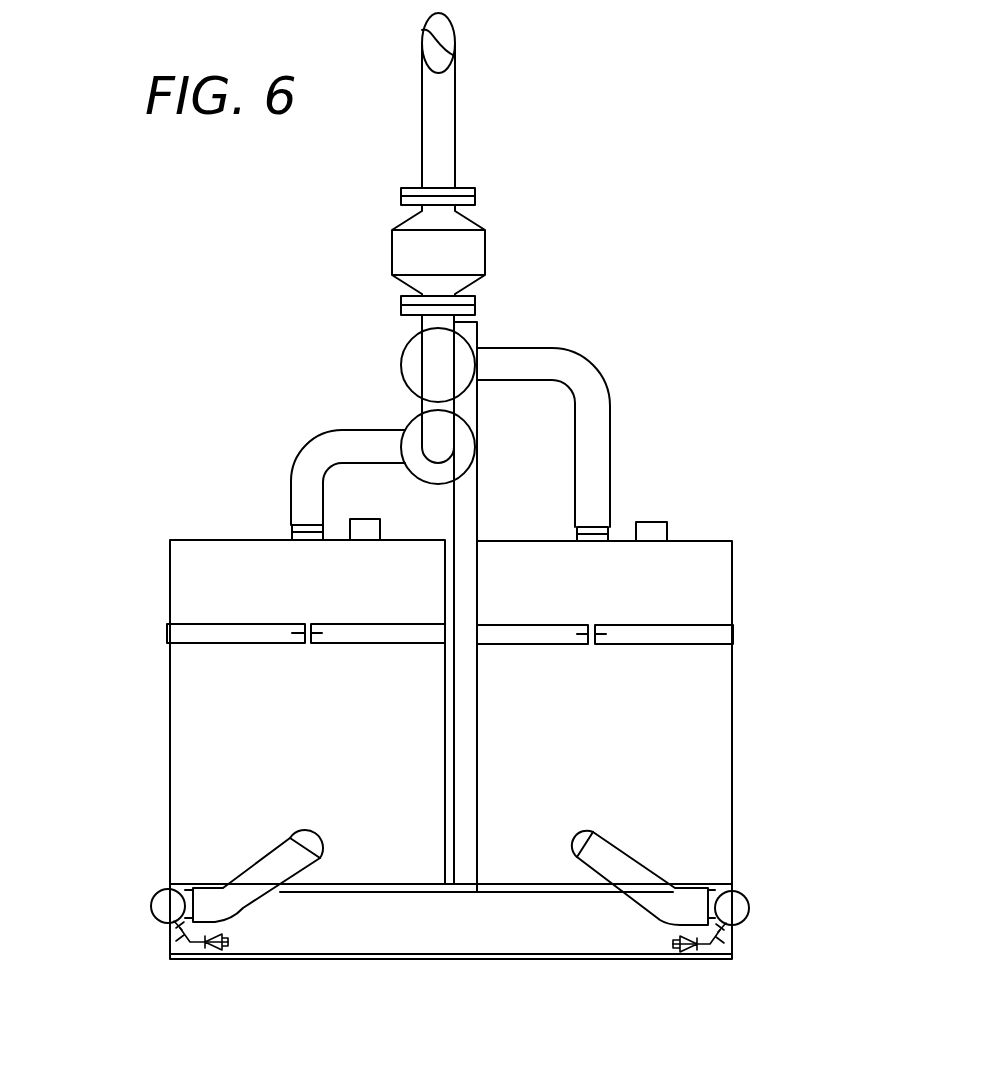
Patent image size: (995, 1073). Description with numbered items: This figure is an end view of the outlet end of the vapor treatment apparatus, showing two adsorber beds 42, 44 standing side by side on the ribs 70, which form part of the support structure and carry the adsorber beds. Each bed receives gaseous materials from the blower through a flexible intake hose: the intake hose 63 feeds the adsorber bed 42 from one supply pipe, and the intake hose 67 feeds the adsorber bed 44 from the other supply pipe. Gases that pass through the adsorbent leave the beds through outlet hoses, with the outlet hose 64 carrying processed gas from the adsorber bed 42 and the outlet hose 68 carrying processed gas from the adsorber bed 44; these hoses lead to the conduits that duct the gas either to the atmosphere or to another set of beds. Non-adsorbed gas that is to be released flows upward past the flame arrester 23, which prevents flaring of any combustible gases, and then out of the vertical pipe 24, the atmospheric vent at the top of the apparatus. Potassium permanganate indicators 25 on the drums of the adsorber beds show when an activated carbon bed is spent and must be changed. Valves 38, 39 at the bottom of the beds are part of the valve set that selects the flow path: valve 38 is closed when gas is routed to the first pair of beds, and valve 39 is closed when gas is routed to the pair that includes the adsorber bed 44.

The flame arrester 23 is at (485, 250).
The vertical pipe 24 is at (457, 113).
The potassium permanganate indicators 25 is at (380, 530).
The valve 38 is at (688, 955).
The valve 39 is at (208, 955).
The adsorber bed 42 is at (748, 671).
The adsorber bed 44 is at (153, 678).
The intake hose 63 is at (608, 848).
The outlet hose 64 is at (610, 468).
The intake hose 67 is at (288, 848).
The outlet hose 68 is at (315, 438).
The ribs 70 is at (425, 941).